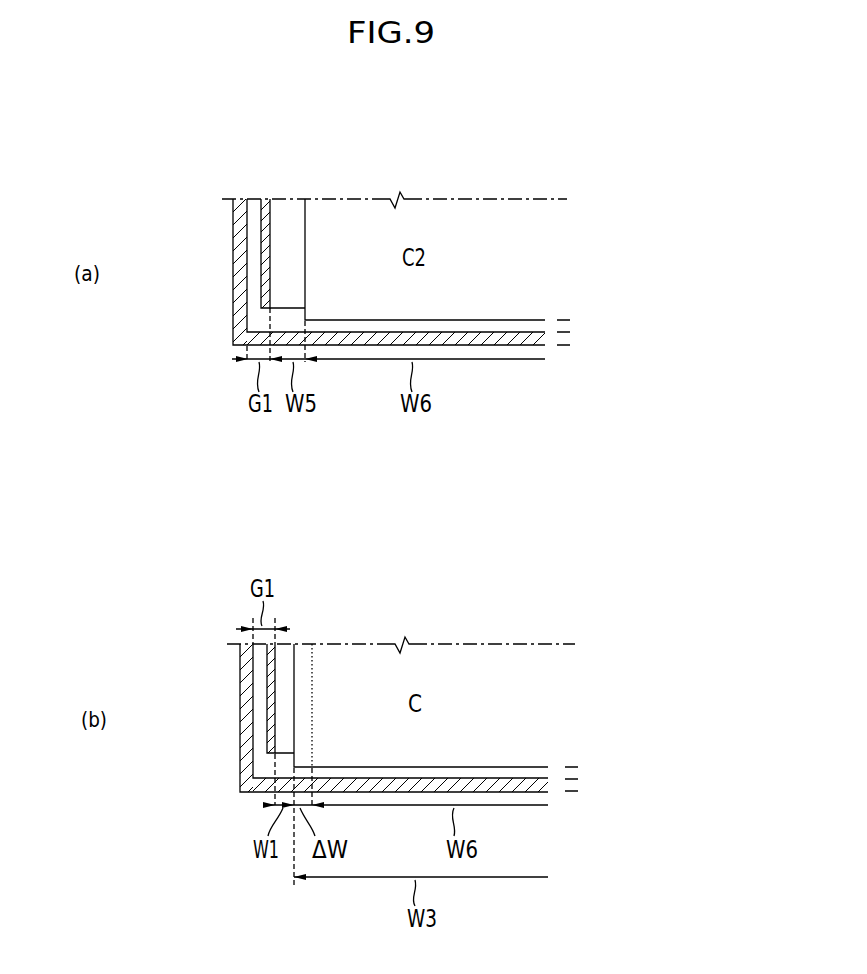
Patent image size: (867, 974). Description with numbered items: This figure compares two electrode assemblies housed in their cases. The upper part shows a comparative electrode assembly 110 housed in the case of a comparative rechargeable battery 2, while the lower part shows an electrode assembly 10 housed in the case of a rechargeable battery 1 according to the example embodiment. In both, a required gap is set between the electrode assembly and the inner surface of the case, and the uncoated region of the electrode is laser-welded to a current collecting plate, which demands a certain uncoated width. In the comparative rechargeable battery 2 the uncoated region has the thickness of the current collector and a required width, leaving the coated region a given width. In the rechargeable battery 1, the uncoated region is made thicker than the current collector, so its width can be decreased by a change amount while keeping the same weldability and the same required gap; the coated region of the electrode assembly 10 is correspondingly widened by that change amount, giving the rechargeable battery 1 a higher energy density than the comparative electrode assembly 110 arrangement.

The rechargeable battery 1 is at (406, 556).
The comparative rechargeable battery 2 is at (399, 149).
The electrode assembly 10 is at (563, 713).
The comparative electrode assembly 110 is at (556, 268).